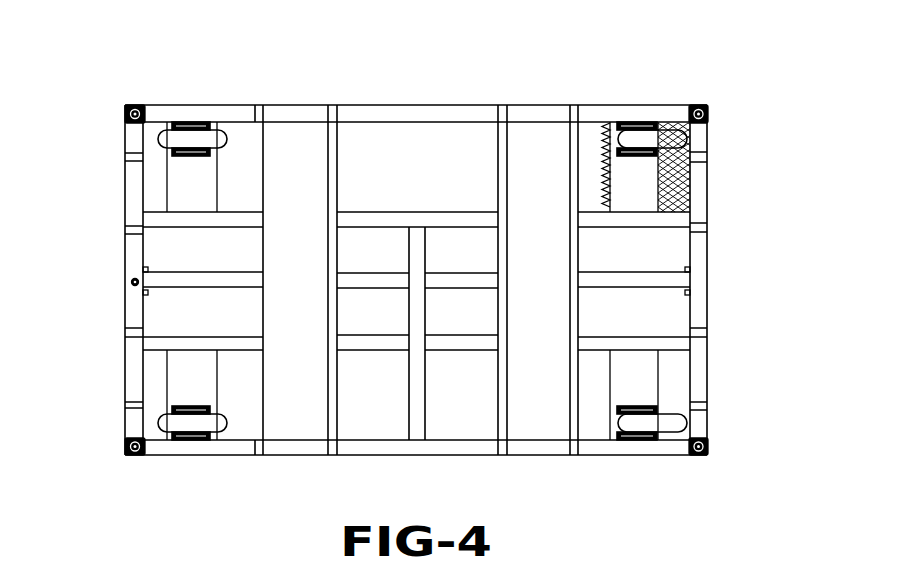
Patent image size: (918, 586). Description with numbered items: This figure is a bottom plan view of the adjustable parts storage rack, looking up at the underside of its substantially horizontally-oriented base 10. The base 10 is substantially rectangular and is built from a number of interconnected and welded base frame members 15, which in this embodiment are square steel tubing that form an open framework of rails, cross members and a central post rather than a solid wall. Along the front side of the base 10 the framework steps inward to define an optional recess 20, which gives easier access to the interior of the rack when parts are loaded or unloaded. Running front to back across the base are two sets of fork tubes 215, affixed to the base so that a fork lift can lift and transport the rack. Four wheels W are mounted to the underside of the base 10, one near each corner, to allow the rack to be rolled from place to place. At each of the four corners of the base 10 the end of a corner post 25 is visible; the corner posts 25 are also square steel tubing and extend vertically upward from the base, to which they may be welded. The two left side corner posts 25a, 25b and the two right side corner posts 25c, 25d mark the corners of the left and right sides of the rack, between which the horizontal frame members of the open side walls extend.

The base 10 is at (418, 279).
The base frame members 15 is at (700, 200).
The recess 20 is at (433, 169).
The fork tubes 215 is at (290, 113).
The wheels W is at (195, 422).
The corner post 25 is at (444, 280).
The left side corner post 25a is at (127, 112).
The left side corner post 25b is at (127, 442).
The right side corner post 25c is at (710, 113).
The right side corner post 25d is at (707, 448).